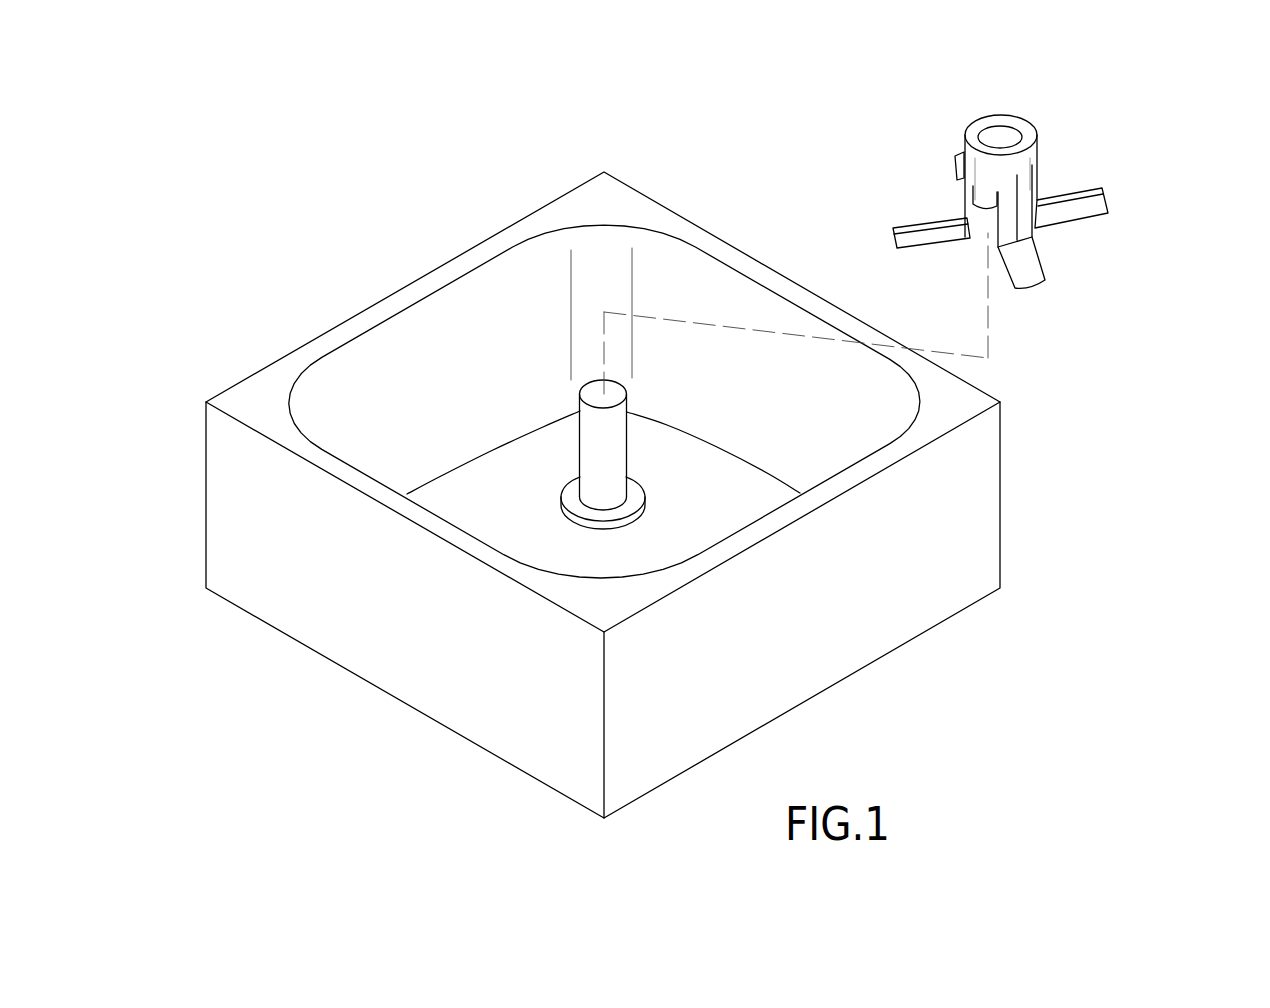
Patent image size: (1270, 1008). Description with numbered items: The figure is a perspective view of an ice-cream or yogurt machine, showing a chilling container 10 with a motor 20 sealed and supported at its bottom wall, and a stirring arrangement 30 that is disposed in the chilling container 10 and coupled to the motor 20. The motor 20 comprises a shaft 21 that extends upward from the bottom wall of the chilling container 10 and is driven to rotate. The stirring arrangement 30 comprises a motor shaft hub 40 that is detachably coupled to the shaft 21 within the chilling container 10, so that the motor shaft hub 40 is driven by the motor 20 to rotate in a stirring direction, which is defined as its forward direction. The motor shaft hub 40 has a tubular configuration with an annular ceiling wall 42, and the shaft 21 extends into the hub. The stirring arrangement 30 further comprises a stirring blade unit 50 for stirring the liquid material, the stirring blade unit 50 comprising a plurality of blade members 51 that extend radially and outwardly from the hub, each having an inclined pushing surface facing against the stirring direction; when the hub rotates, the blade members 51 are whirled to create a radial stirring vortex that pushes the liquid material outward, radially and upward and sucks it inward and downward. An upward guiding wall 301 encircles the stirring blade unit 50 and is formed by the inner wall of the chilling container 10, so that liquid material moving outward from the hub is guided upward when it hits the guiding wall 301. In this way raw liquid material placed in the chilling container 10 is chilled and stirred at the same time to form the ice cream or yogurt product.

The chilling container 10 is at (432, 280).
The upward guiding wall 301 is at (531, 292).
The motor 20 is at (593, 517).
The shaft 21 is at (593, 448).
The stirring arrangement 30 is at (1080, 152).
The motor shaft hub 40 is at (1036, 162).
The annular ceiling wall 42 is at (1025, 128).
The stirring blade unit 50 is at (1014, 215).
The blade members 51 is at (957, 163).